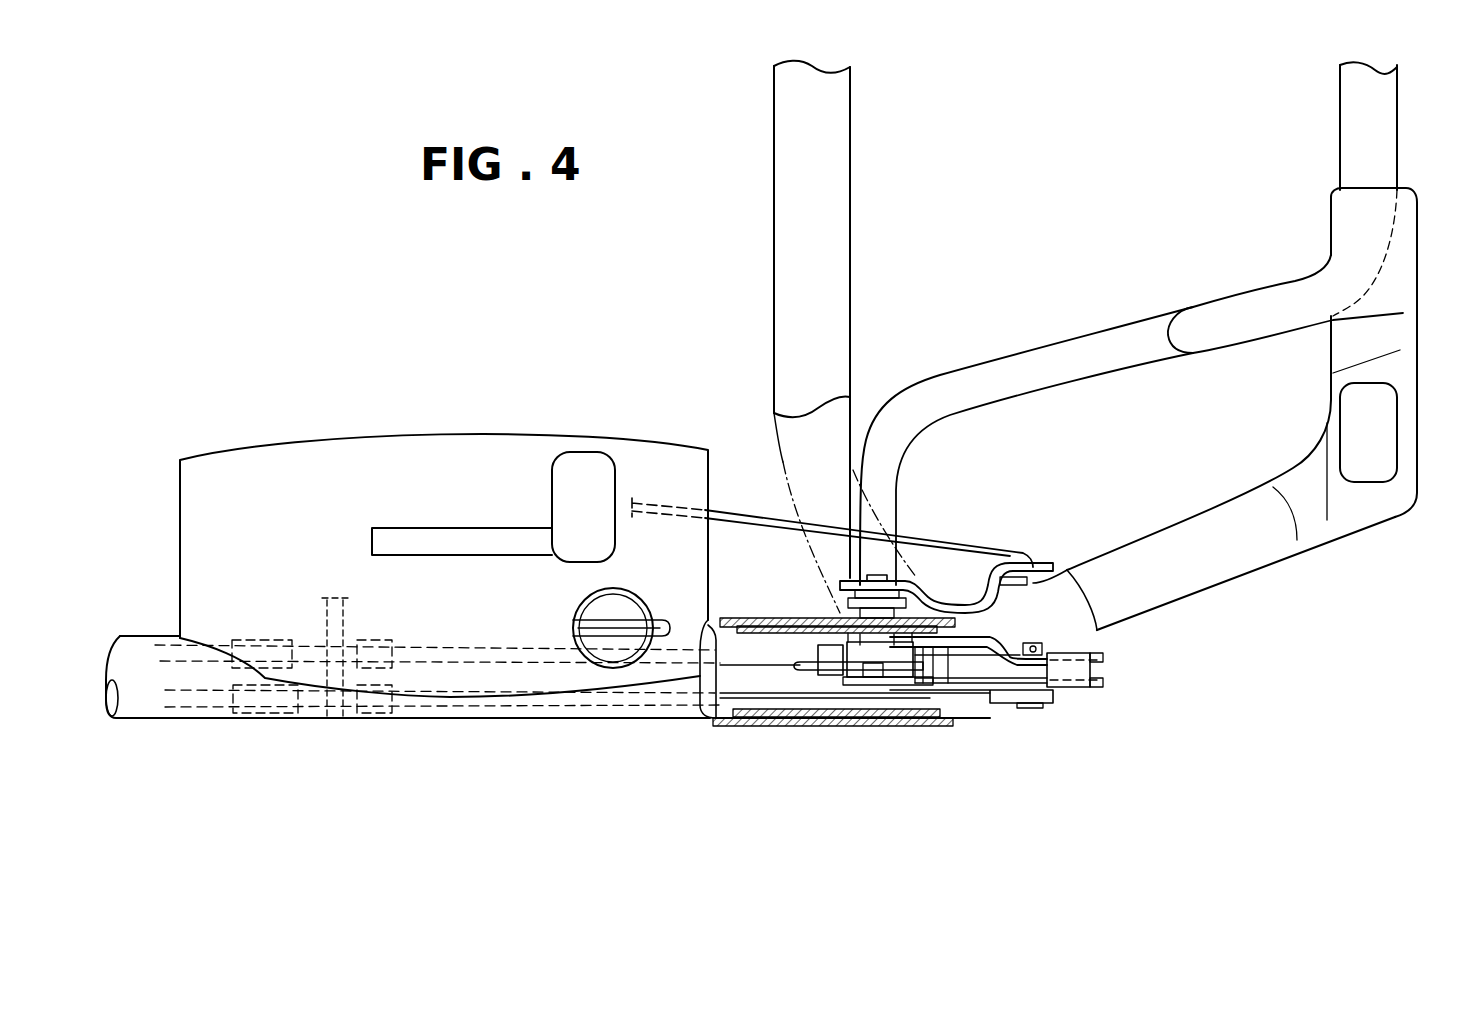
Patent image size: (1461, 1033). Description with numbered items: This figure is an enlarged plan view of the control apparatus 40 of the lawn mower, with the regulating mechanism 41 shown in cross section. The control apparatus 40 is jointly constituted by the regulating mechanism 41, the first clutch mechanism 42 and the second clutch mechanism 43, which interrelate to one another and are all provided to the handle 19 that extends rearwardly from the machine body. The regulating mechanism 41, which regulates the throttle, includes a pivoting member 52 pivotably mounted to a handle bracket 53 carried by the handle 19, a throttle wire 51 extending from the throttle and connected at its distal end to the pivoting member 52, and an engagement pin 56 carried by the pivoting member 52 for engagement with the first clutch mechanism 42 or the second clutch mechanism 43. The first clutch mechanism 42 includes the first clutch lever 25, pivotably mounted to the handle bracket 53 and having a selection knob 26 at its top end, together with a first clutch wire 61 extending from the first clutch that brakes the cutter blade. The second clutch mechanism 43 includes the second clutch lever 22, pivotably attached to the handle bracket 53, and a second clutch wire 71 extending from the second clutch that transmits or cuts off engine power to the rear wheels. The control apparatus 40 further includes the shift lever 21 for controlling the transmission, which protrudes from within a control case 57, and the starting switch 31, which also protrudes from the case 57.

The handle 19 is at (833, 127).
The control apparatus 40 is at (1210, 193).
The second clutch mechanism 43 is at (990, 282).
The second clutch lever 22 is at (1037, 357).
The selection knob 26 is at (1367, 483).
The first clutch lever 25 is at (1247, 553).
The first clutch mechanism 42 is at (1245, 635).
The control case 57 is at (392, 430).
The shift lever 21 is at (583, 448).
The starting switch 31 is at (613, 648).
The throttle wire 51 is at (502, 660).
The first clutch wire 61 is at (555, 700).
The second clutch wire 71 is at (658, 503).
The engagement pin 56 is at (873, 577).
The handle bracket 53 is at (730, 687).
The regulating mechanism 41 is at (800, 677).
The pivoting member 52 is at (930, 687).